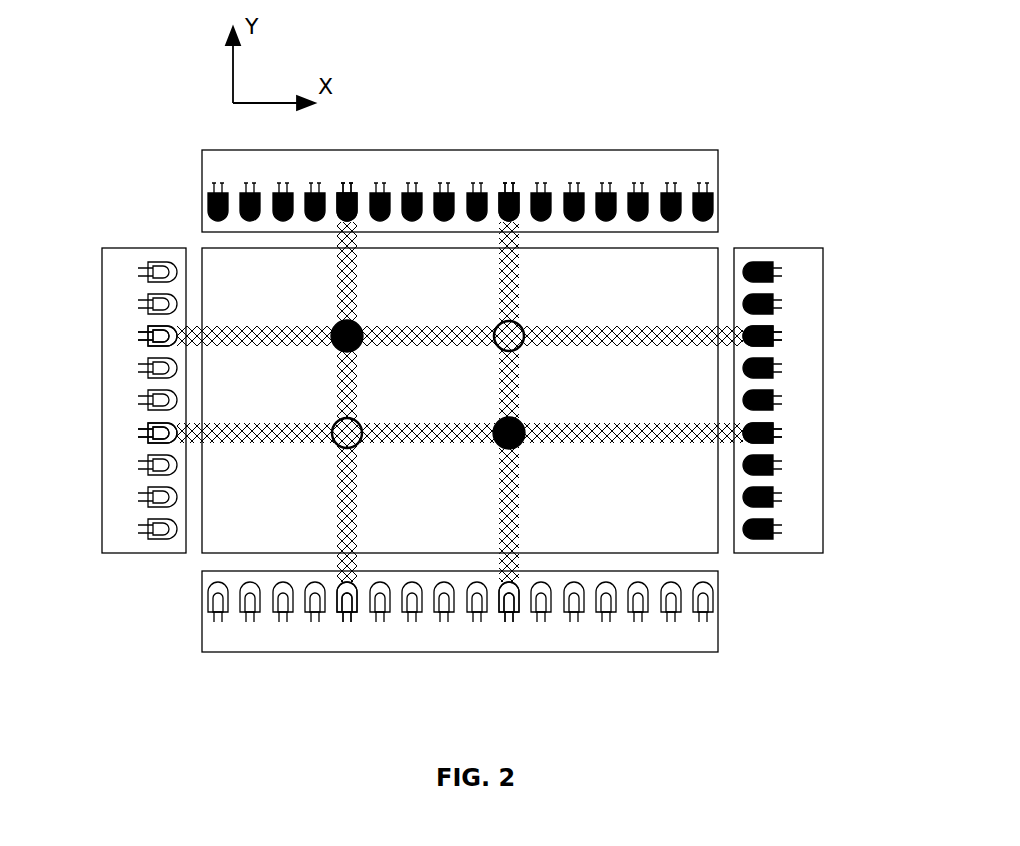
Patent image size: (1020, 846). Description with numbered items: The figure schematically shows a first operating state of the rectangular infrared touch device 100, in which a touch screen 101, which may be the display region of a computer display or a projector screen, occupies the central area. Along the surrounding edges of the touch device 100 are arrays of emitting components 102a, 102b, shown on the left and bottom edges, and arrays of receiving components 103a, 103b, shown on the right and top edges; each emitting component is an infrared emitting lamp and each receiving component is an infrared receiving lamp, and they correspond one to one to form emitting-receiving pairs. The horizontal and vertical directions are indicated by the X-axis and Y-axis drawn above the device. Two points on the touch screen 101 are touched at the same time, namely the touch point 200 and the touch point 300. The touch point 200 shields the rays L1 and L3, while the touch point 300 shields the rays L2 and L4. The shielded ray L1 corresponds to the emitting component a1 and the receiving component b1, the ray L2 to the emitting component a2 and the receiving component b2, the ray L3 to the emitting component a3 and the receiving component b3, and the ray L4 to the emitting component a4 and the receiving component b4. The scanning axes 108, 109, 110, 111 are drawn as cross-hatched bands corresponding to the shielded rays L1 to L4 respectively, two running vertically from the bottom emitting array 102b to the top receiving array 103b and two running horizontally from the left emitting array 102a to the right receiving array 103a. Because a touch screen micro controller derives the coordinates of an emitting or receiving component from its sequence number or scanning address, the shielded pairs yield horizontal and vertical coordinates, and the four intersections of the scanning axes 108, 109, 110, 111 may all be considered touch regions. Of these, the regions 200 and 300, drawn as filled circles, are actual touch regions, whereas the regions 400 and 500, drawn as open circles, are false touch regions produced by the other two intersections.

The touch device 100 is at (176, 197).
The touch screen 101 is at (713, 278).
The array of emitting components 102a is at (145, 263).
The array of emitting components 102b is at (712, 598).
The array of receiving components 103a is at (768, 263).
The array of receiving components 103b is at (577, 195).
The scanning axis 108 is at (292, 402).
The scanning axis 109 is at (454, 402).
The scanning axis 110 is at (460, 322).
The scanning axis 111 is at (460, 420).
The touch point 200 is at (372, 350).
The touch point 300 is at (530, 448).
The false touch region 400 is at (533, 350).
The false touch region 500 is at (372, 449).
The emitting component a1 is at (353, 616).
The emitting component a2 is at (513, 616).
The emitting component a3 is at (142, 337).
The emitting component a4 is at (142, 434).
The receiving component b1 is at (346, 189).
The receiving component b2 is at (508, 189).
The receiving component b3 is at (778, 337).
The receiving component b4 is at (778, 434).